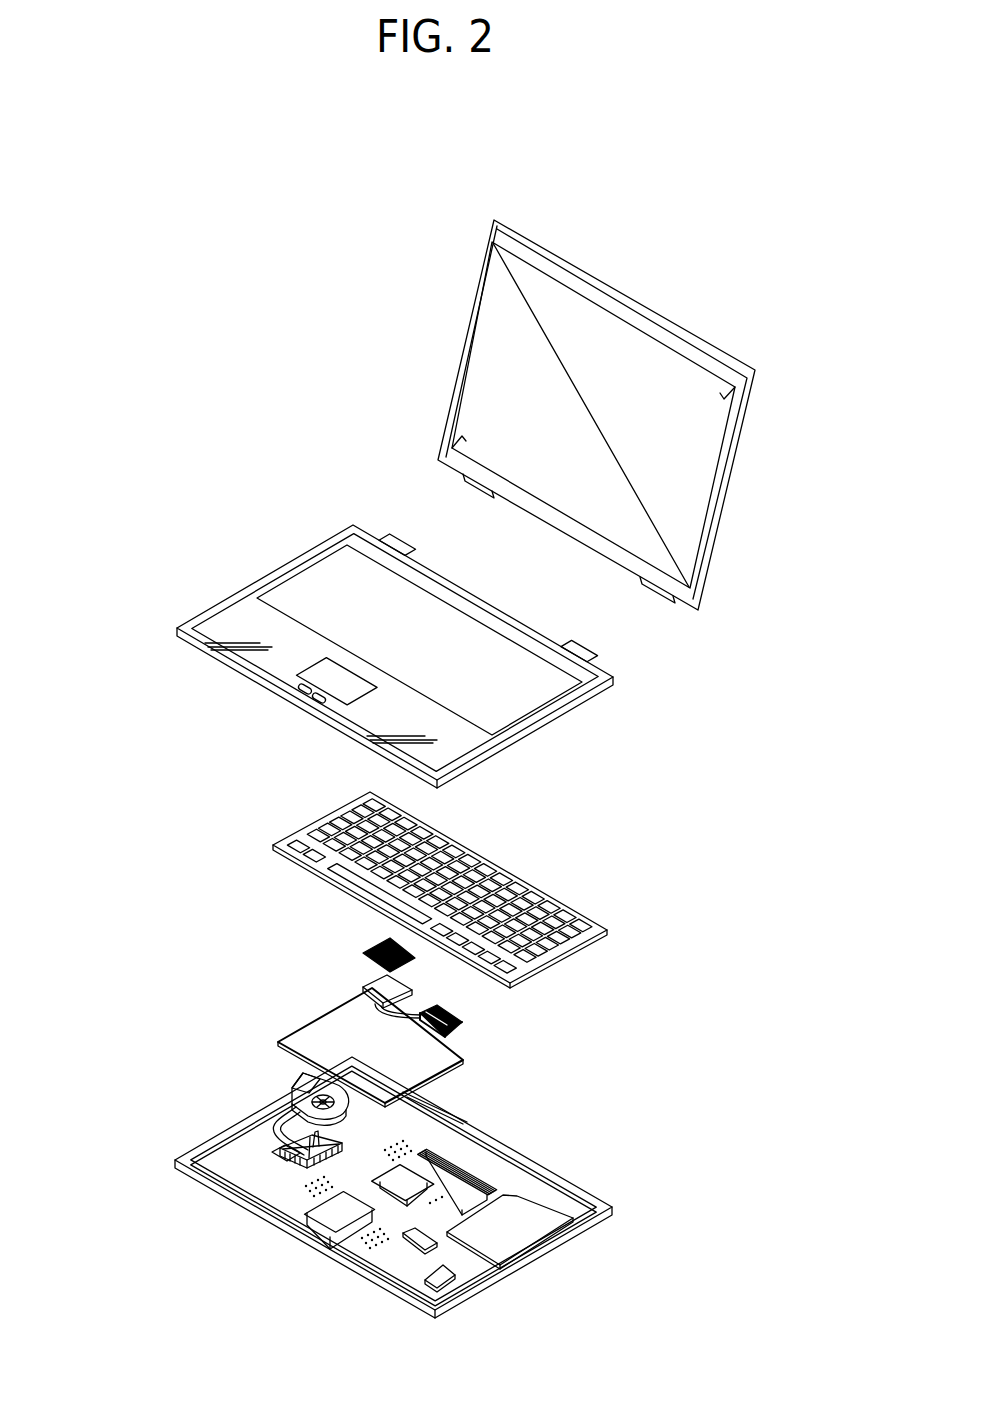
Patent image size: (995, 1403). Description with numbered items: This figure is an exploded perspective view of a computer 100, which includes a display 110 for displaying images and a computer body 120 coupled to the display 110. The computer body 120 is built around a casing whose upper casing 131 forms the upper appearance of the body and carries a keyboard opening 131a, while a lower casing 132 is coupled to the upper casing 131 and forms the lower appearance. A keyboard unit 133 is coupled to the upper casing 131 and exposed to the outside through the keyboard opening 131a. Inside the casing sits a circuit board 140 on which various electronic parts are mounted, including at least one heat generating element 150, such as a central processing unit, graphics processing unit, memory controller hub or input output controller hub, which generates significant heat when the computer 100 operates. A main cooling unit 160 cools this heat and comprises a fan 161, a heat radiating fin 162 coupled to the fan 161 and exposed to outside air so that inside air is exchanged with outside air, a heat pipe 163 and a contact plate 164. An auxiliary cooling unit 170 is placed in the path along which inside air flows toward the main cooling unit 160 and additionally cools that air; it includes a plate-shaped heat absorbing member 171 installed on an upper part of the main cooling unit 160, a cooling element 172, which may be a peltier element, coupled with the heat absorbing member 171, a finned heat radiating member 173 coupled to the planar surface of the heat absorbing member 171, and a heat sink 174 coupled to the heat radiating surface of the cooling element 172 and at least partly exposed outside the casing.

The computer 100 is at (110, 315).
The display 110 is at (483, 366).
The computer body 120 is at (653, 686).
The upper casing 131 is at (290, 568).
The keyboard opening 131a is at (486, 666).
The lower casing 132 is at (530, 1263).
The keyboard unit 133 is at (323, 822).
The circuit board 140 is at (393, 1263).
The heat generating element 150 is at (280, 1152).
The main cooling unit 160 is at (122, 1053).
The fan 161 is at (323, 1092).
The heat radiating fin 162 is at (294, 1098).
The heat pipe 163 is at (277, 1114).
The contact plate 164 is at (290, 1142).
The auxiliary cooling unit 170 is at (254, 910).
The heat absorbing member 171 is at (312, 1025).
The cooling element 172 is at (384, 988).
The heat radiating member 173 is at (373, 1013).
The heat sink 174 is at (381, 945).